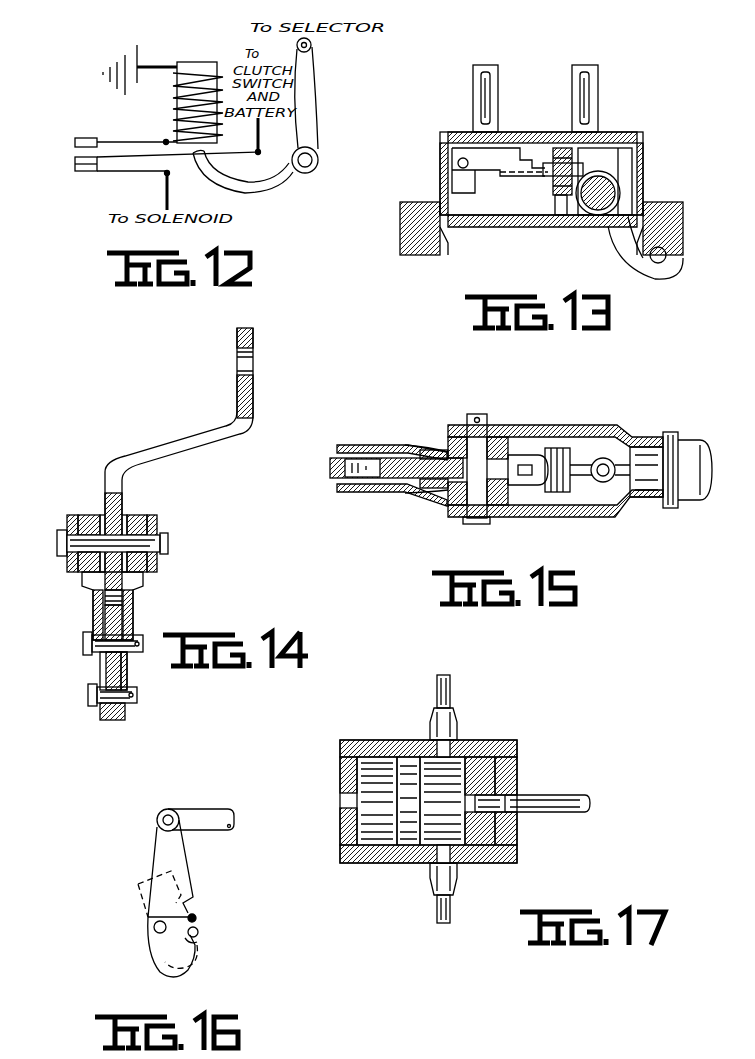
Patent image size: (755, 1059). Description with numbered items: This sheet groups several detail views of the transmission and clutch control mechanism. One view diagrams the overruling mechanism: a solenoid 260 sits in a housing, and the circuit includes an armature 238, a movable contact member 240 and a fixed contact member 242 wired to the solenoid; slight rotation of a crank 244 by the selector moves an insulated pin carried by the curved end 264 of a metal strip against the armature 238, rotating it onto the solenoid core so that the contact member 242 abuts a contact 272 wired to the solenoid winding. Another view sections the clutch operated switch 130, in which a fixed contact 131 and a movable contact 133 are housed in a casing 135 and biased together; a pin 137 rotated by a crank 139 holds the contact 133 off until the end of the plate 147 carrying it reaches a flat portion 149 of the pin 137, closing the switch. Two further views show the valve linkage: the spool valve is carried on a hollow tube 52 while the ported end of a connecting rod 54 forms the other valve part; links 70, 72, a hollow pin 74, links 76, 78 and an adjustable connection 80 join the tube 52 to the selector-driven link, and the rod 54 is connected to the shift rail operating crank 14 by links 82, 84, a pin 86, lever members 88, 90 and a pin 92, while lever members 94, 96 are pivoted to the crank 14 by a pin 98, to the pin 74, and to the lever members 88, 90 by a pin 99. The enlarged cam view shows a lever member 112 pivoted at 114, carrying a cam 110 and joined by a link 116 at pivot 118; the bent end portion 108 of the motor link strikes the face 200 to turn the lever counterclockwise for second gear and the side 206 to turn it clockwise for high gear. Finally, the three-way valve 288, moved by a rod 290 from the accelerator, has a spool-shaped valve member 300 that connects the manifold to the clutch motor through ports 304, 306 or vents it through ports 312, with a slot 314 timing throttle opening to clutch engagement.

In FIG. 14, the shift rail operating crank 14 is at (150, 448).
In FIG. 15, the shift rail operating crank 14 is at (330, 468).
In FIG. 15, the hollow tube 52 is at (627, 507).
In FIG. 15, the connecting rod 54 is at (690, 460).
In FIG. 14, the link 70 is at (88, 515).
In FIG. 15, the link 70 is at (332, 445).
In FIG. 14, the link 72 is at (143, 514).
In FIG. 15, the link 72 is at (340, 497).
In FIG. 14, the hollow pin 74 is at (157, 561).
In FIG. 15, the hollow pin 74 is at (503, 443).
In FIG. 14, the link 76 is at (102, 505).
In FIG. 15, the link 76 is at (545, 433).
In FIG. 14, the link 78 is at (131, 513).
In FIG. 15, the link 78 is at (512, 506).
In FIG. 15, the adjustable connection 80 is at (547, 477).
In FIG. 14, the link 82 is at (74, 518).
In FIG. 15, the link 82 is at (565, 431).
In FIG. 14, the link 84 is at (157, 523).
In FIG. 15, the link 84 is at (582, 517).
In FIG. 14, the pin 86 is at (62, 540).
In FIG. 15, the pin 86 is at (481, 415).
In FIG. 14, the lever member 88 is at (125, 599).
In FIG. 15, the lever member 88 is at (407, 496).
In FIG. 14, the lever member 90 is at (92, 614).
In FIG. 15, the lever member 90 is at (430, 450).
In FIG. 14, the pin 92 is at (125, 624).
In FIG. 14, the lever member 94 is at (127, 674).
In FIG. 15, the lever member 94 is at (420, 500).
In FIG. 14, the lever member 96 is at (100, 672).
In FIG. 15, the lever member 96 is at (427, 447).
In FIG. 14, the pin 98 is at (92, 692).
In FIG. 14, the pin 99 is at (83, 644).
In FIG. 16, the bent end portion 108 is at (195, 918).
In FIG. 16, the cam 110 is at (197, 936).
In FIG. 16, the lever member 112 is at (180, 861).
In FIG. 16, the pivot 114 is at (155, 929).
In FIG. 16, the link 116 is at (227, 794).
In FIG. 16, the pivot 118 is at (158, 821).
In FIG. 13, the clutch operated switch 130 is at (622, 136).
In FIG. 13, the fixed contact 131 is at (553, 196).
In FIG. 13, the movable contact 133 is at (553, 188).
In FIG. 13, the casing 135 is at (642, 165).
In FIG. 13, the pin 137 is at (602, 200).
In FIG. 13, the crank 139 is at (645, 262).
In FIG. 13, the plate 147 is at (497, 160).
In FIG. 13, the flat portion 149 is at (595, 152).
In FIG. 16, the face 200 is at (180, 914).
In FIG. 16, the side 206 is at (187, 924).
In FIG. 12, the armature 238 is at (187, 178).
In FIG. 12, the movable contact member 240 is at (75, 164).
In FIG. 12, the fixed contact member 242 is at (75, 171).
In FIG. 12, the crank 244 is at (308, 68).
In FIG. 12, the solenoid 260 is at (176, 116).
In FIG. 12, the curved end 264 is at (270, 183).
In FIG. 12, the contact 272 is at (75, 142).
In FIG. 17, the three-way valve 288 is at (478, 750).
In FIG. 17, the rod 290 is at (562, 802).
In FIG. 17, the spool-shaped valve member 300 is at (408, 836).
In FIG. 17, the port 304 is at (435, 746).
In FIG. 17, the port 306 is at (453, 858).
In FIG. 17, the ports 312 is at (518, 772).
In FIG. 17, the slot 314 is at (507, 847).